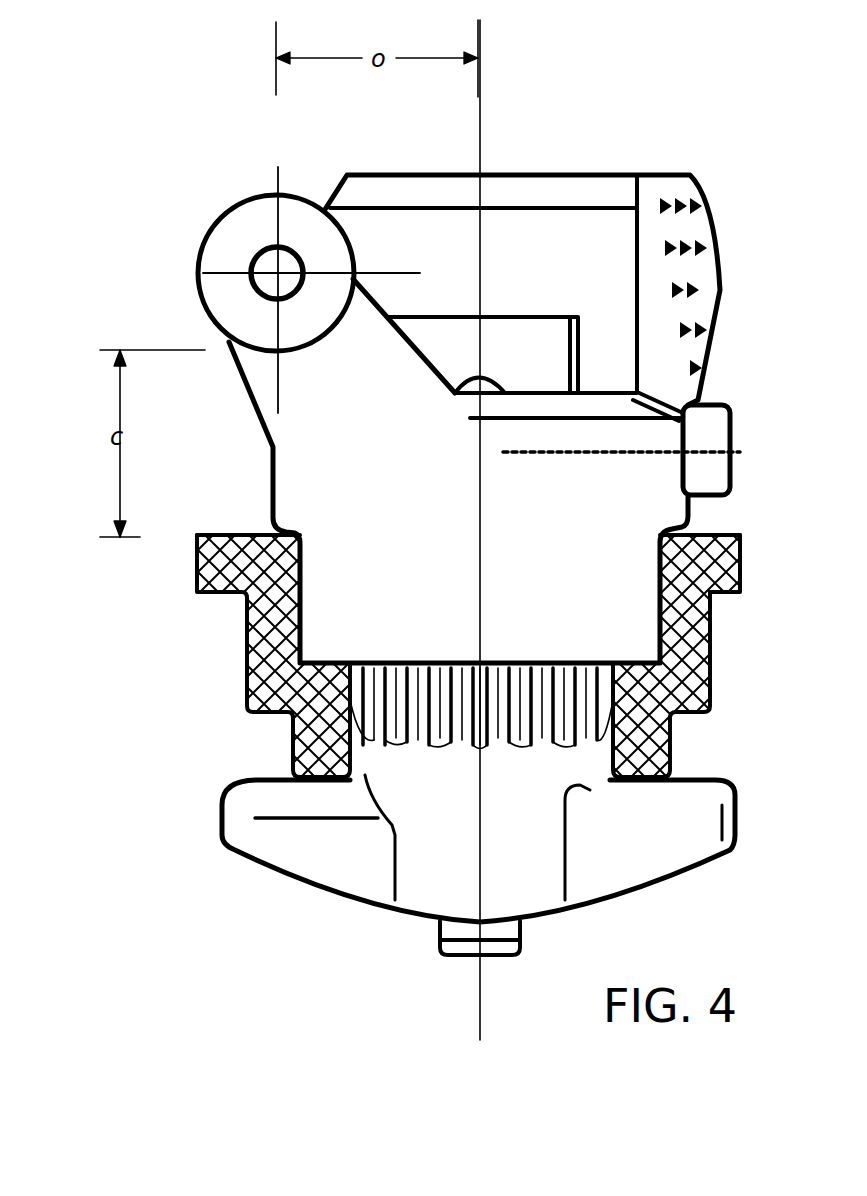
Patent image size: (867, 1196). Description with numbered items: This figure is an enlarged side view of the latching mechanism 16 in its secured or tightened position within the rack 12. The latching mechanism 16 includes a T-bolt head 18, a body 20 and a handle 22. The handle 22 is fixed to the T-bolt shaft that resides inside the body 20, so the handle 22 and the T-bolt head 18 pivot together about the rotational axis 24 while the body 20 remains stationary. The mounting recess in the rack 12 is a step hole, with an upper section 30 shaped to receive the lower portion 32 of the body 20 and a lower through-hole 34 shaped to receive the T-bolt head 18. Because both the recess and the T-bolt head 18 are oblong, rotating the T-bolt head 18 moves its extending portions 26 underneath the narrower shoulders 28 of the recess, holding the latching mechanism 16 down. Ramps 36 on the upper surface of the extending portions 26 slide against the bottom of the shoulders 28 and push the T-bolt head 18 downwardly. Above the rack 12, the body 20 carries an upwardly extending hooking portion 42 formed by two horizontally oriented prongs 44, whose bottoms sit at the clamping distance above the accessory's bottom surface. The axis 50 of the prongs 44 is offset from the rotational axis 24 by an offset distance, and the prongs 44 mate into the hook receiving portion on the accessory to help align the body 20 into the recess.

The rack 12 is at (216, 570).
The latching mechanism 16 is at (246, 88).
The T-bolt head 18 is at (446, 850).
The body 20 is at (665, 515).
The handle 22 is at (615, 266).
The rotational axis 24 is at (480, 52).
The extending portions 26 is at (290, 848).
The shoulders 28 is at (665, 740).
The upper section 30 is at (462, 656).
The lower portion 32 is at (640, 612).
The lower through-hole 34 is at (600, 710).
The ramps 36 is at (280, 795).
The hooking portion 42 is at (271, 265).
The horizontally oriented prongs 44 is at (220, 248).
The axis 50 is at (279, 268).